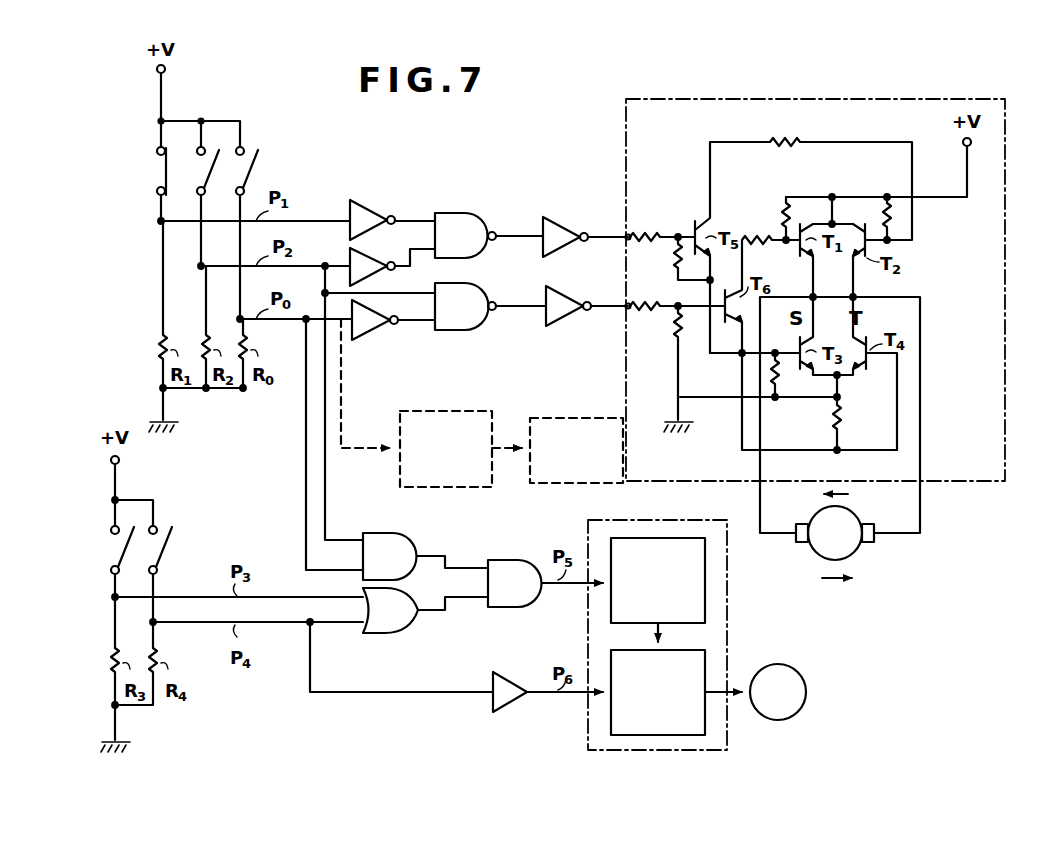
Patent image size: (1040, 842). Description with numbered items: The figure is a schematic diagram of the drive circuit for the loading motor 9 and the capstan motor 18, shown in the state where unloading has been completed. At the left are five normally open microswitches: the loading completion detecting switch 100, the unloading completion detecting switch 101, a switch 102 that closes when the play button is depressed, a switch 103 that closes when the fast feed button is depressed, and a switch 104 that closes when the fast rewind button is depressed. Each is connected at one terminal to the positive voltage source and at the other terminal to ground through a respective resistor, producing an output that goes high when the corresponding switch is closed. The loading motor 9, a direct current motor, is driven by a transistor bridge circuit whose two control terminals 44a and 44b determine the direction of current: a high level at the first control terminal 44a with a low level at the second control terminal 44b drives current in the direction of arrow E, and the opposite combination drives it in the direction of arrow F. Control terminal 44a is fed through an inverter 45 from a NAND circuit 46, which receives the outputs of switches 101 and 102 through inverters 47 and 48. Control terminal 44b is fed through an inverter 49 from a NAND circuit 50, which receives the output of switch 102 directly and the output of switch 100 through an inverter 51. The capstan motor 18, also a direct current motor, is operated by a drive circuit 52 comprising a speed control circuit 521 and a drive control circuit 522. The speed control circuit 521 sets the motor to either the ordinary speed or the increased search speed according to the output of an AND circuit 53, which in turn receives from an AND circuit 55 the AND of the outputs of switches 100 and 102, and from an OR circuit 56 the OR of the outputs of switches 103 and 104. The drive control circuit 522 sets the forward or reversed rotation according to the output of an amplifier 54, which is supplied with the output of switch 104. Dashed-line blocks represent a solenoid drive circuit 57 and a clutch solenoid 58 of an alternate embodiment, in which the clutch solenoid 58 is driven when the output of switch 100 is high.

The loading completion detecting switch 100 is at (262, 157).
The unloading completion detecting switch 101 is at (158, 176).
The switch 102 is at (200, 192).
The switch 103 is at (112, 553).
The switch 104 is at (164, 553).
The inverter 47 is at (366, 208).
The inverter 48 is at (370, 257).
The NAND circuit 46 is at (460, 212).
The inverter 45 is at (552, 212).
The first control terminal 44a is at (631, 228).
The second control terminal 44b is at (632, 315).
The inverter 51 is at (376, 326).
The NAND circuit 50 is at (476, 330).
The inverter 49 is at (556, 326).
The AND circuit 55 is at (398, 534).
The OR circuit 56 is at (398, 634).
The AND circuit 53 is at (506, 558).
The amplifier 54 is at (510, 710).
The solenoid drive circuit 57 is at (451, 409).
The clutch solenoid 58 is at (578, 408).
The drive circuit 52 is at (683, 636).
The speed control circuit 521 is at (708, 570).
The drive control circuit 522 is at (700, 718).
The loading motor 9 is at (858, 548).
The capstan motor 18 is at (798, 712).